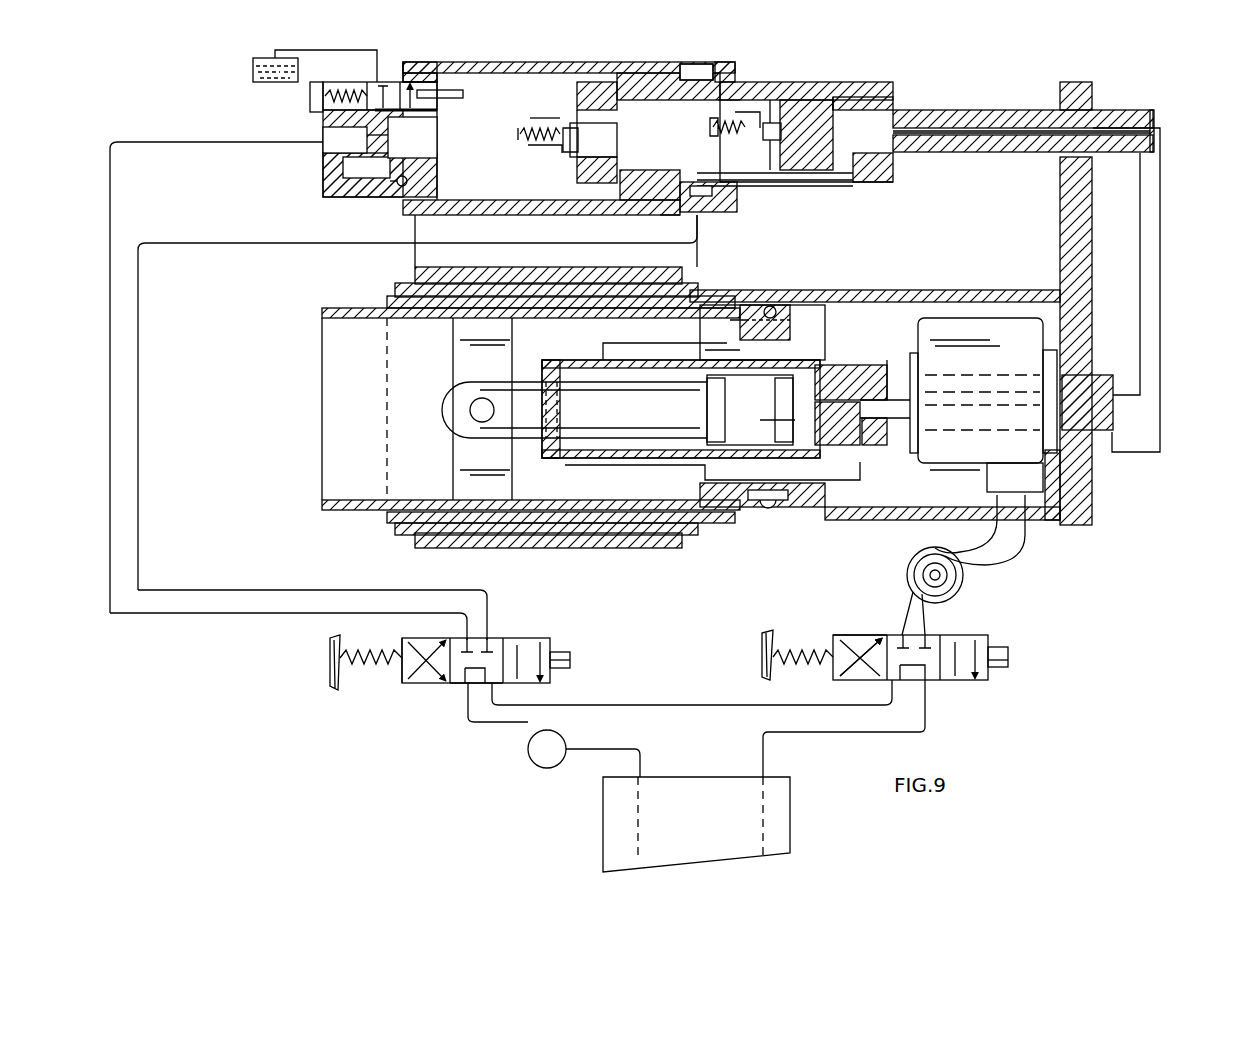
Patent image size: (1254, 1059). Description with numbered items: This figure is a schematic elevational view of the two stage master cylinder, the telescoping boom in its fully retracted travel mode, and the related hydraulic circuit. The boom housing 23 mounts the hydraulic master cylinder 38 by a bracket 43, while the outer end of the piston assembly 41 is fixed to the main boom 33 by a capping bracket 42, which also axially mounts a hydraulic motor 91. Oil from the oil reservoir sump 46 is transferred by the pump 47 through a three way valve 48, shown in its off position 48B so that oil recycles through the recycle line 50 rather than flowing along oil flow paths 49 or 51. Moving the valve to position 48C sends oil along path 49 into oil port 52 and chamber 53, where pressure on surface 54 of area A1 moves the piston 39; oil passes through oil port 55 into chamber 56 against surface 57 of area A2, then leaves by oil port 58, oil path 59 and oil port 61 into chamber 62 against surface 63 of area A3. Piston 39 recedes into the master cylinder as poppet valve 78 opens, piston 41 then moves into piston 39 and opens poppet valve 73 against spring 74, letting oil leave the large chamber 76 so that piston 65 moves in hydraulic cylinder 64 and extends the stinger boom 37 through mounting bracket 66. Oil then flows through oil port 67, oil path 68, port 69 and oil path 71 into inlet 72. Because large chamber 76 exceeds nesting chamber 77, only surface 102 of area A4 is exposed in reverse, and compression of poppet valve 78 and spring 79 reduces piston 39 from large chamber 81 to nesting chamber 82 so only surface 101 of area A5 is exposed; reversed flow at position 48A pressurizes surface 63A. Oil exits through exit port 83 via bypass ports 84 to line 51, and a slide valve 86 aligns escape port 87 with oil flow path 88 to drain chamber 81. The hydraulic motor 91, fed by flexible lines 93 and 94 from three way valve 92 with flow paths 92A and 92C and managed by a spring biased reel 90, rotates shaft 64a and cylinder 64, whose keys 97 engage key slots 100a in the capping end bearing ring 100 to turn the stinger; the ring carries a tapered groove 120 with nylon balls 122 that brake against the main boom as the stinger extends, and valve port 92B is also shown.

The boom housing 23 is at (636, 548).
The main boom 33 is at (895, 290).
The stinger boom 37 is at (328, 308).
The hydraulic master cylinder 38 is at (498, 62).
The piston 39 is at (812, 80).
The piston assembly 41 is at (976, 110).
The capping bracket 42 is at (1080, 252).
The bracket 43 is at (684, 250).
The oil reservoir sump 46 is at (677, 834).
The pump 47 is at (540, 766).
The three way valve 48 is at (533, 638).
The valve position 48A is at (555, 680).
The off position 48B is at (462, 683).
The valve position 48C is at (412, 683).
The oil flow path 49 is at (253, 590).
The recycle line 50 is at (692, 705).
The oil flow path 51 is at (237, 613).
The oil port 52 is at (737, 198).
The chamber 53 is at (710, 65).
The surface 54 is at (684, 64).
The oil port 55 is at (806, 184).
The chamber 56 is at (878, 97).
The surface 57 is at (838, 97).
The oil port 58 is at (978, 152).
The oil path 59 is at (1140, 198).
The oil port 61 is at (1090, 375).
The chamber 62 is at (812, 350).
The surface 63 is at (820, 377).
The surface 63A is at (710, 400).
The hydraulic cylinder 64 is at (573, 360).
The shaft 64a is at (887, 362).
The piston 65 is at (733, 398).
The mounting bracket 66 is at (456, 370).
The oil port 67 is at (560, 458).
The oil path 68 is at (630, 466).
The port 69 is at (870, 445).
The oil path 71 is at (1162, 265).
The inlet 72 is at (1155, 128).
The poppet valve 73 is at (780, 145).
The spring 74 is at (712, 127).
The large chamber 76 is at (638, 95).
The nesting chamber 77 is at (622, 100).
The poppet valve 78 is at (590, 140).
The spring 79 is at (520, 140).
The large chamber 81 is at (462, 72).
The nesting chamber 82 is at (437, 158).
The exit port 83 is at (323, 130).
The bypass ports 84 is at (390, 136).
The slide valve 86 is at (393, 82).
The escape port 87 is at (440, 110).
The oil flow path 88 is at (315, 50).
The spring biased reel 90 is at (965, 577).
The hydraulic motor 91 is at (964, 342).
The three way valve 92 is at (982, 635).
The flow path 92A is at (1008, 670).
The valve port 92B is at (935, 682).
The flow path 92C is at (840, 637).
The flow line 93 is at (1028, 545).
The flow line 94 is at (962, 548).
The longitudinal extending keys 97 is at (655, 345).
The capping end bearing ring 100 is at (805, 300).
The key slots 100a is at (758, 305).
The surface 101 is at (540, 153).
The surface 102 is at (734, 148).
The tapered groove 120 is at (798, 505).
The nylon balls 122 is at (764, 508).
The area A1 is at (662, 215).
The area A2 is at (853, 182).
The area A3 is at (780, 422).
The area A4 is at (738, 98).
The area A5 is at (532, 118).